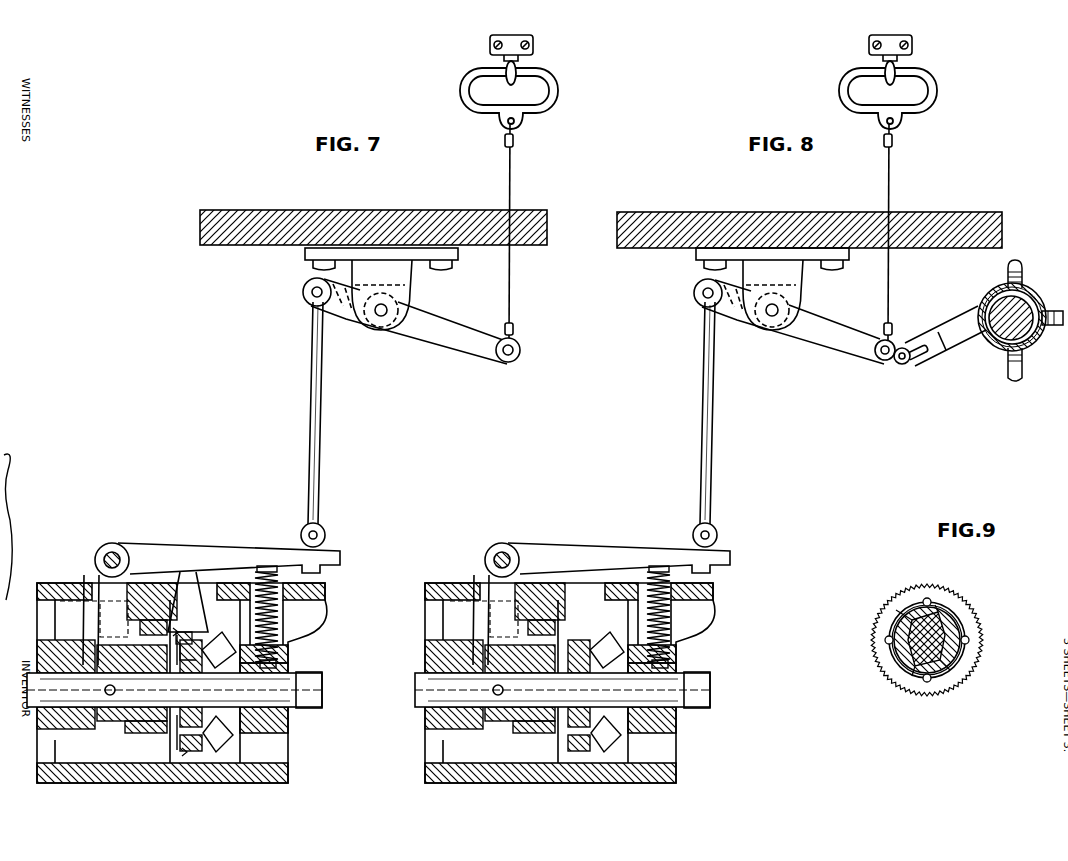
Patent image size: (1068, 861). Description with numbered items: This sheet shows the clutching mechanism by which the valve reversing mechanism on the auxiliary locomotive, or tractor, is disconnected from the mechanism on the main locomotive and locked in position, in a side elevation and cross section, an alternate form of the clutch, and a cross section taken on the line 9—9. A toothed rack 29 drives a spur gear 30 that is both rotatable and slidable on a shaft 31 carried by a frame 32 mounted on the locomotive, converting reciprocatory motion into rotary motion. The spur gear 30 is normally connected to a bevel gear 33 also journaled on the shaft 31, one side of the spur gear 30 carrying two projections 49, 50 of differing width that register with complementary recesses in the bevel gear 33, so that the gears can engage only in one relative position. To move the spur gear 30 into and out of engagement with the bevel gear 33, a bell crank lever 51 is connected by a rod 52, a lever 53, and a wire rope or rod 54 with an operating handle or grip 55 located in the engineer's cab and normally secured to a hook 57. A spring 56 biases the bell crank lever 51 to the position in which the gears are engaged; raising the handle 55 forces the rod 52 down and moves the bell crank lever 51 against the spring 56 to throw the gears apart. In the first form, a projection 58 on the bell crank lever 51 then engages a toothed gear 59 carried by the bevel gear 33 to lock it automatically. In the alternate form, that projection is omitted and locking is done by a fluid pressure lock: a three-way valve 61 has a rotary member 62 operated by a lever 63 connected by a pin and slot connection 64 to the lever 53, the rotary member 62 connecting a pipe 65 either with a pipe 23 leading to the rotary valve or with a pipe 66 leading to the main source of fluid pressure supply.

In FIG. 7, the section line 9— 9 is at (177, 693).
In FIG. 8, the pipe 23 is at (1021, 378).
In FIG. 7, the toothed rack 29 is at (145, 615).
In FIG. 8, the toothed rack 29 is at (565, 630).
In FIG. 7, the spur gear 30 is at (135, 720).
In FIG. 8, the spur gear 30 is at (520, 722).
In FIG. 7, the shaft 31 is at (40, 668).
In FIG. 8, the shaft 31 is at (428, 668).
In FIG. 7, the frame 32 is at (60, 585).
In FIG. 8, the frame 32 is at (570, 683).
In FIG. 7, the bevel gear 33 is at (222, 742).
In FIG. 8, the bevel gear 33 is at (590, 722).
In FIG. 9, the projection 49 is at (928, 622).
In FIG. 7, the projection 50 is at (175, 727).
In FIG. 9, the projection 50 is at (932, 675).
In FIG. 7, the bell crank lever 51 is at (131, 546).
In FIG. 8, the bell crank lever 51 is at (536, 548).
In FIG. 7, the rod 52 is at (322, 441).
In FIG. 8, the rod 52 is at (714, 447).
In FIG. 7, the lever 53 is at (457, 346).
In FIG. 8, the lever 53 is at (840, 350).
In FIG. 7, the wire rope or rod 54 is at (512, 272).
In FIG. 8, the wire rope or rod 54 is at (890, 190).
In FIG. 7, the operating handle or grip 55 is at (560, 94).
In FIG. 8, the operating handle or grip 55 is at (916, 95).
In FIG. 7, the spring 56 is at (278, 619).
In FIG. 8, the spring 56 is at (672, 640).
In FIG. 7, the hook 57 is at (522, 58).
In FIG. 8, the hook 57 is at (901, 58).
In FIG. 7, the projection 58 is at (192, 598).
In FIG. 7, the toothed gear 59 is at (207, 633).
In FIG. 9, the toothed gear 59 is at (907, 595).
In FIG. 8, the three-way valve 61 is at (1033, 294).
In FIG. 8, the rotary member 62 is at (1002, 290).
In FIG. 8, the lever 63 is at (954, 336).
In FIG. 8, the pin and slot connection 64 is at (905, 368).
In FIG. 8, the pipe 65 is at (1058, 330).
In FIG. 8, the pipe 66 is at (1016, 257).